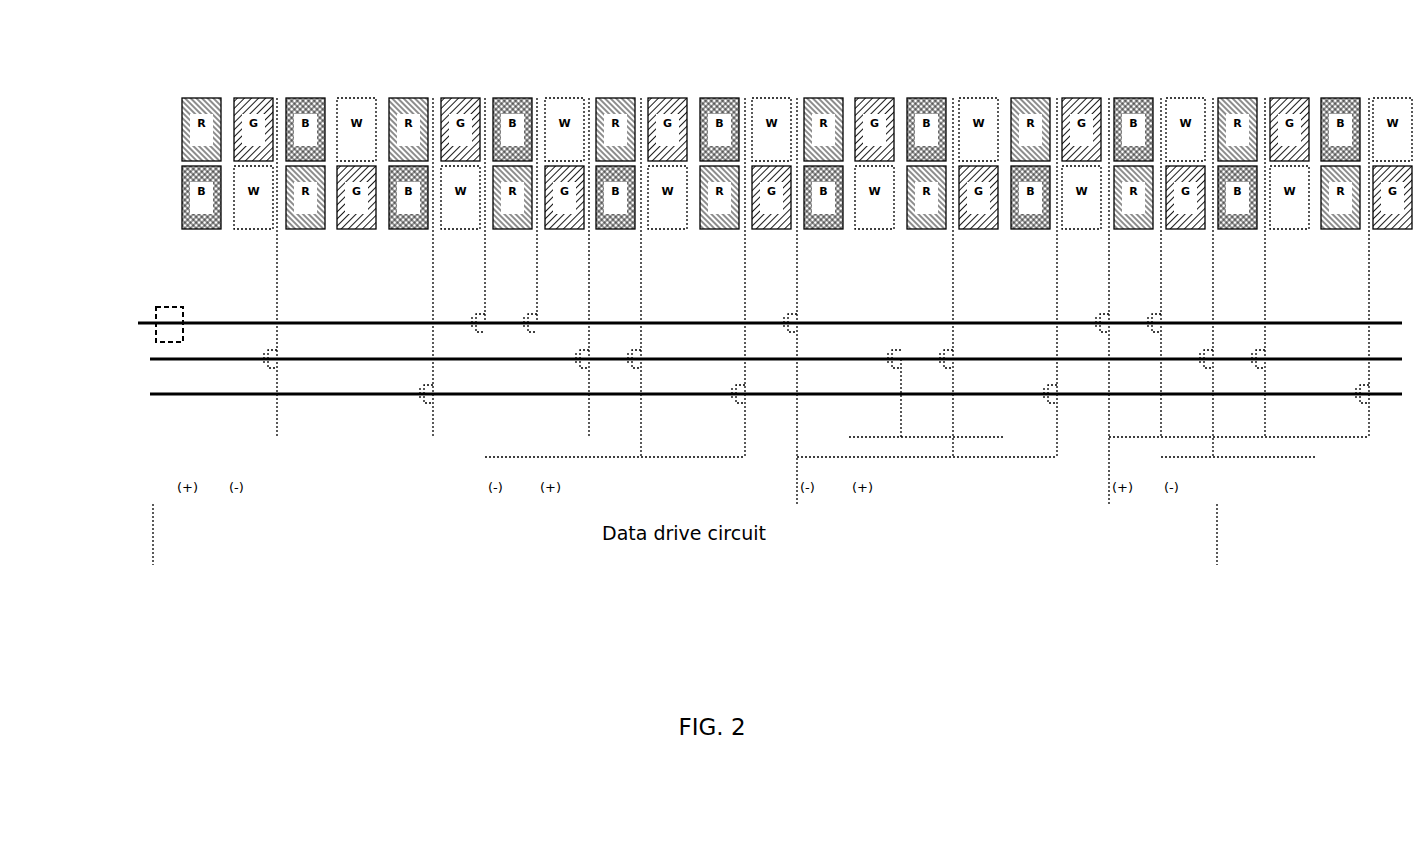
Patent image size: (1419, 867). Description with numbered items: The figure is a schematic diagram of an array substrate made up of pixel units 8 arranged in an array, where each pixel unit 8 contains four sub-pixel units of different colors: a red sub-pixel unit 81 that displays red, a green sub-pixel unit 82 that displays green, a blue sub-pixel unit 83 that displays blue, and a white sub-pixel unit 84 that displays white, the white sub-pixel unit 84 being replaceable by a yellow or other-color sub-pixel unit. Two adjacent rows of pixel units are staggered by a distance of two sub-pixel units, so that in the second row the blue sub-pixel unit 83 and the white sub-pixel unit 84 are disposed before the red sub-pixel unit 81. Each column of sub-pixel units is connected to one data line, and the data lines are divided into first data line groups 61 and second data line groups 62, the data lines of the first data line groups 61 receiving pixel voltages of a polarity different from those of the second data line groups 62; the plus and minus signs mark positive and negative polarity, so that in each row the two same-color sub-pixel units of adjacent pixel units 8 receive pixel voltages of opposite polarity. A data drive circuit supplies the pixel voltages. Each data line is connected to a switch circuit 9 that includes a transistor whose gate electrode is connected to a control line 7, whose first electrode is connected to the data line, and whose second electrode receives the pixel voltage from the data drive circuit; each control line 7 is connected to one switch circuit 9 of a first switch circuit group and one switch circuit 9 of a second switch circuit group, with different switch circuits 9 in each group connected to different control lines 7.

The pixel unit 8 is at (307, 98).
The second data line group 62 is at (380, 98).
The red sub-pixel unit 81 is at (183, 140).
The green sub-pixel unit 82 is at (449, 99).
The blue sub-pixel unit 83 is at (182, 218).
The white sub-pixel unit 84 is at (237, 228).
The first data line group 61 is at (433, 303).
The control line 7 is at (140, 326).
The switch circuit 9 is at (157, 343).